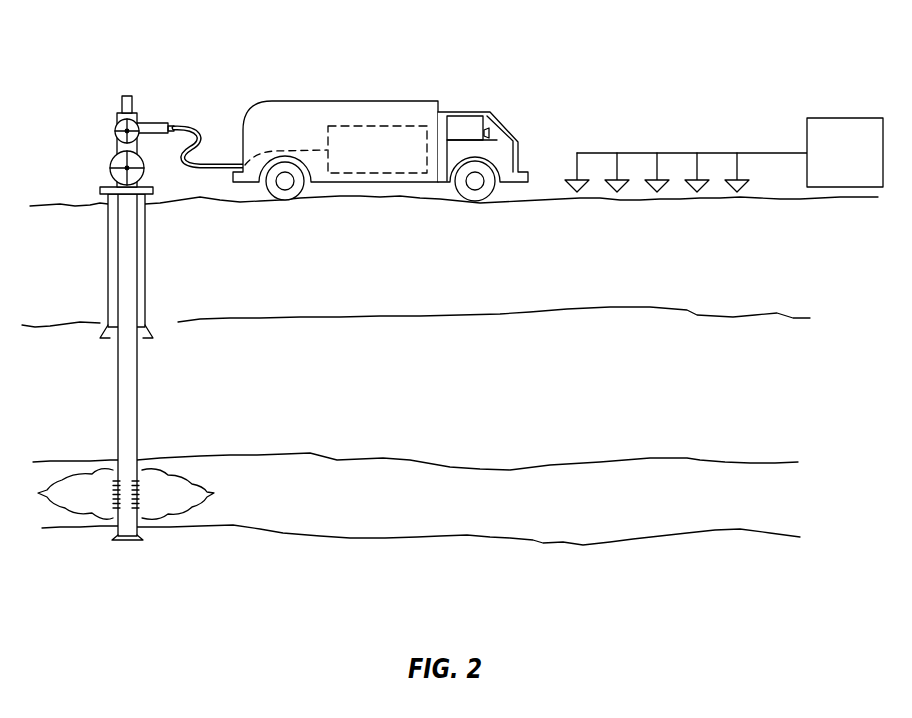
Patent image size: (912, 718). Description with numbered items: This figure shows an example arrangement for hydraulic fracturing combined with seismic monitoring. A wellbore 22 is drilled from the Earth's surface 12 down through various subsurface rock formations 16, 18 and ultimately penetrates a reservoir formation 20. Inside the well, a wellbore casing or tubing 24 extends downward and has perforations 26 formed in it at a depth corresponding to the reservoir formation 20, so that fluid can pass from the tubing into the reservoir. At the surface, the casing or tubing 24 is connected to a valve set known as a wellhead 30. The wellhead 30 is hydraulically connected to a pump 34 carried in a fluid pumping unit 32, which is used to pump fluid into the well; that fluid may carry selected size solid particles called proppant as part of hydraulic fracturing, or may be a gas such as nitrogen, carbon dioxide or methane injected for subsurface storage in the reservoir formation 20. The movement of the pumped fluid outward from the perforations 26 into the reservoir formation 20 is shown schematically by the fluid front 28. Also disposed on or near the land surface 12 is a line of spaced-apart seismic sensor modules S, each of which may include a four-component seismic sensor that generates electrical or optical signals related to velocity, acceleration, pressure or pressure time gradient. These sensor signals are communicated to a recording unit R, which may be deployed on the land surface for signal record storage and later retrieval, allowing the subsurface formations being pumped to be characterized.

The land surface 12 is at (507, 201).
The subsurface rock formation 16 is at (356, 270).
The subsurface rock formation 18 is at (356, 383).
The reservoir formation 20 is at (356, 516).
The wellbore 22 is at (145, 260).
The wellbore casing or tubing 24 is at (137, 386).
The perforations 26 is at (147, 494).
The fluid front 28 is at (215, 493).
The wellhead 30 is at (155, 122).
The fluid pumping unit 32 is at (307, 100).
The pump 34 is at (350, 126).
The recording unit R is at (847, 113).
The seismic sensor modules S is at (570, 184).